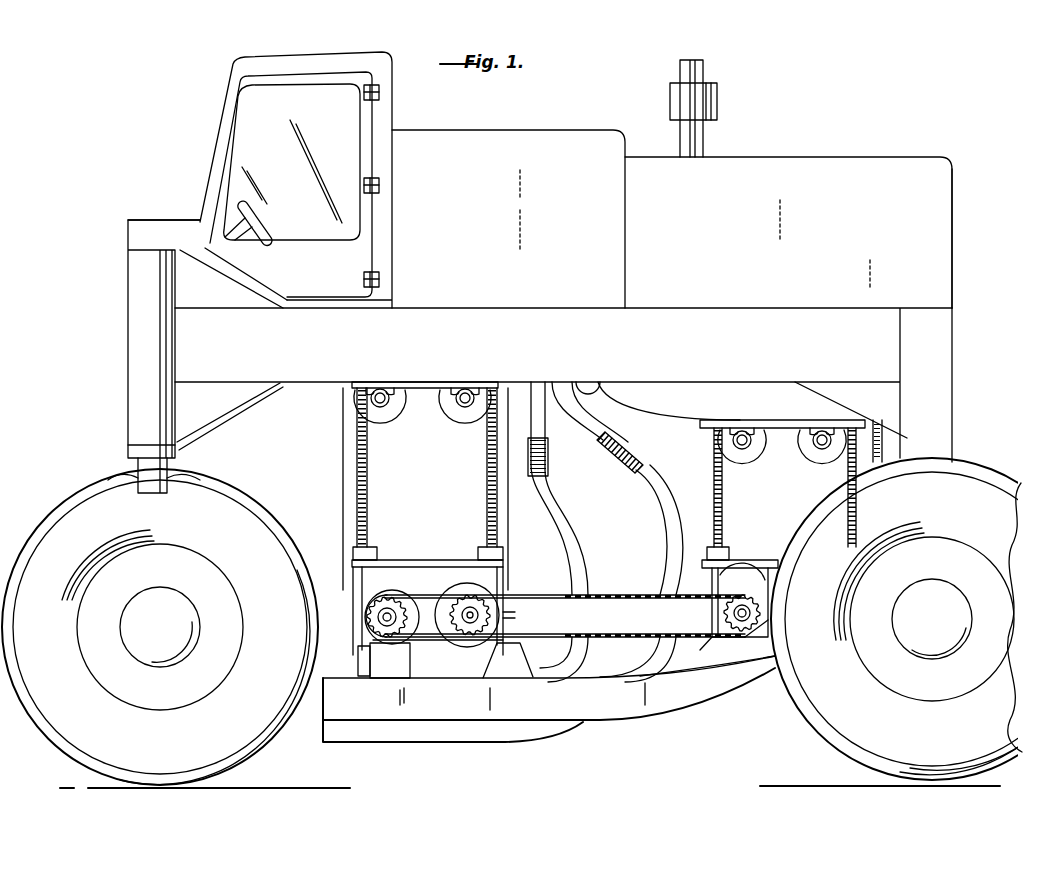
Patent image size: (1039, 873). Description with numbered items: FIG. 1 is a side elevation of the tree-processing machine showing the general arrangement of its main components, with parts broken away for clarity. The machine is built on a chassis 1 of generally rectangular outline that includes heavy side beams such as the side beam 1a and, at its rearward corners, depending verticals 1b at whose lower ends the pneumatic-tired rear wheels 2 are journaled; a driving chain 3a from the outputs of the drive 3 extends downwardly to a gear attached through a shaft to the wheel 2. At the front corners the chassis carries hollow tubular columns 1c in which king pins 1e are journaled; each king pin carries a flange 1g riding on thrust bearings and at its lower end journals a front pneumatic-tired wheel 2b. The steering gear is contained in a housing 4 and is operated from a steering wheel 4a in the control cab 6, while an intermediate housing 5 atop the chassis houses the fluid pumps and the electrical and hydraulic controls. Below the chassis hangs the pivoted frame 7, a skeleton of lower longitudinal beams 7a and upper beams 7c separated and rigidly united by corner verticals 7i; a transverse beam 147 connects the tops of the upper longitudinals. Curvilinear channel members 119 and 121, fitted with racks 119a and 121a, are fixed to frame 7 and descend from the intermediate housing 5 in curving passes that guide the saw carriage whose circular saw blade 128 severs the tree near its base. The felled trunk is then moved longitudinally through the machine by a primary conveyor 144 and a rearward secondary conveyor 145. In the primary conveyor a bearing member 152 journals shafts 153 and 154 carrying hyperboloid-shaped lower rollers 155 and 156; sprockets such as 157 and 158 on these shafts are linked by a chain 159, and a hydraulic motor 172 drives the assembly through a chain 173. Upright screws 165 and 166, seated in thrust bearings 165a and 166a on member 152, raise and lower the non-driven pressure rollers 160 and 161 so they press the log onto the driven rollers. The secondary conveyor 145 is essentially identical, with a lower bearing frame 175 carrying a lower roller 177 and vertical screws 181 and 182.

The chassis 1 is at (890, 148).
The side beam 1a is at (690, 374).
The vertical 1b is at (942, 413).
The tubular column 1c is at (137, 308).
The king pin 1e is at (148, 471).
The flange 1g is at (145, 450).
The pneumatic tired wheel 2 is at (808, 714).
The pneumatic-tired wheel 2b is at (52, 514).
The rear housing side 3 is at (950, 278).
The driving chain 3a is at (888, 450).
The housing 4 is at (141, 227).
The steering wheel 4a is at (258, 222).
The intermediate housing 5 is at (578, 140).
The control cab 6 is at (220, 132).
The frame 7 is at (631, 729).
The lower longitudinal beam 7a is at (728, 683).
The upper beam 7c is at (660, 410).
The vertical 7i is at (884, 425).
The curvilinear channel member 119 is at (560, 550).
The rack 119a is at (549, 460).
The curvilinear channel member 121 is at (678, 490).
The rack 121a is at (635, 472).
The circular saw blade 128 is at (605, 382).
The primary conveyor 144 is at (404, 542).
The secondary conveyor 145 is at (771, 528).
The transverse beam 147 is at (357, 667).
The bearing member 152 is at (425, 566).
The shaft 153 is at (389, 608).
The shaft 154 is at (468, 632).
The conveyor roller 155 is at (372, 592).
The conveyor roller 156 is at (455, 588).
The sprocket 157 is at (370, 614).
The shaft stub 158 is at (505, 602).
The chain 159 is at (620, 593).
The pressure roller 160 is at (392, 421).
The pressure roller 161 is at (468, 421).
The screw 165 is at (368, 491).
The thrust bearing 165a is at (358, 548).
The screw 166 is at (497, 470).
The thrust bearing 166a is at (520, 548).
The hydraulic motor 172 is at (385, 676).
The chain 173 is at (365, 642).
The lower bearing frame 175 is at (708, 641).
The lower roller 177 is at (752, 592).
The screw 181 is at (713, 468).
The screw 182 is at (850, 455).